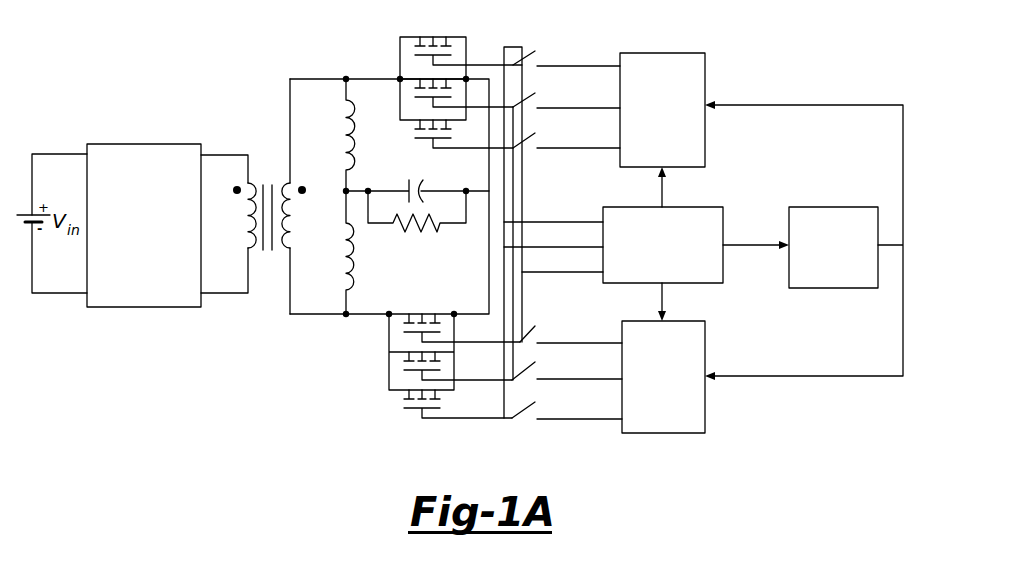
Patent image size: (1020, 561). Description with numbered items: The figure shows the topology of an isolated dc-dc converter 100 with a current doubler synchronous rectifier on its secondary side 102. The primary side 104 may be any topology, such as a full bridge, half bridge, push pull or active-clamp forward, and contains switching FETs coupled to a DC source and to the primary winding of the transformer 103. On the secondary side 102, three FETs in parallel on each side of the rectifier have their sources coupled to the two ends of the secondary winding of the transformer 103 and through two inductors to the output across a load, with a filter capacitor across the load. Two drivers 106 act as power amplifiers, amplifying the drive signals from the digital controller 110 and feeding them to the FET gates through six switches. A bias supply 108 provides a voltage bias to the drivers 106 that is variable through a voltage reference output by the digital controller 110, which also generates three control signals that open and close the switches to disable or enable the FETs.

The isolated dc-dc converter 100 is at (230, 378).
The secondary side 102 is at (703, 246).
The transformer 103 is at (264, 149).
The primary side 104 is at (131, 124).
The drivers 106 is at (689, 53).
The bias supply 108 is at (807, 288).
The digital controller 110 is at (722, 207).